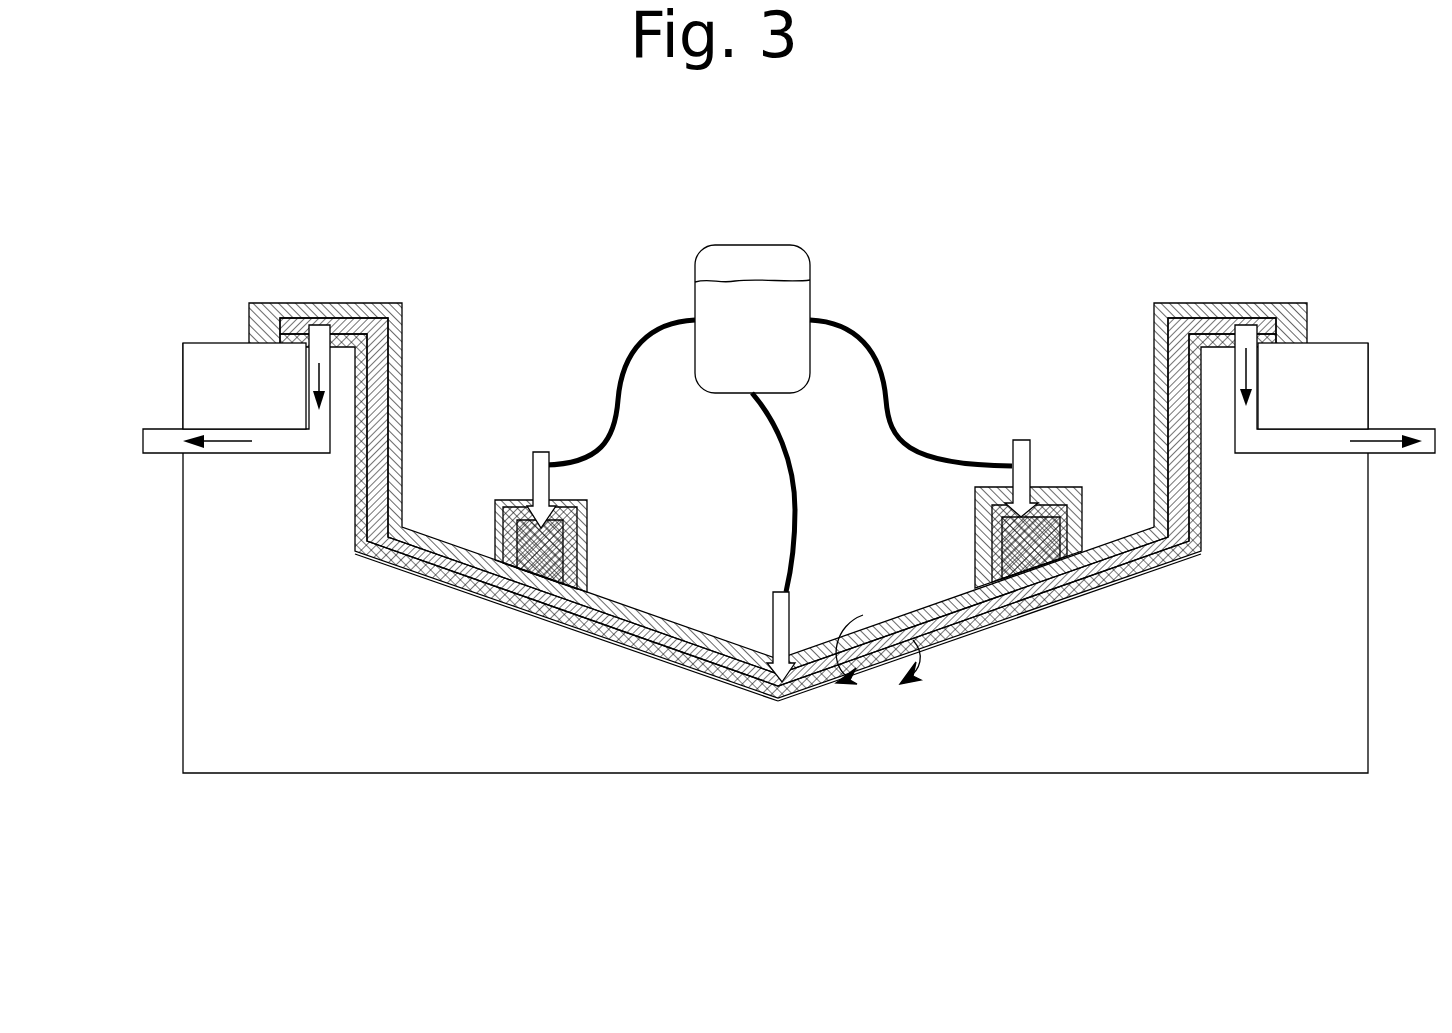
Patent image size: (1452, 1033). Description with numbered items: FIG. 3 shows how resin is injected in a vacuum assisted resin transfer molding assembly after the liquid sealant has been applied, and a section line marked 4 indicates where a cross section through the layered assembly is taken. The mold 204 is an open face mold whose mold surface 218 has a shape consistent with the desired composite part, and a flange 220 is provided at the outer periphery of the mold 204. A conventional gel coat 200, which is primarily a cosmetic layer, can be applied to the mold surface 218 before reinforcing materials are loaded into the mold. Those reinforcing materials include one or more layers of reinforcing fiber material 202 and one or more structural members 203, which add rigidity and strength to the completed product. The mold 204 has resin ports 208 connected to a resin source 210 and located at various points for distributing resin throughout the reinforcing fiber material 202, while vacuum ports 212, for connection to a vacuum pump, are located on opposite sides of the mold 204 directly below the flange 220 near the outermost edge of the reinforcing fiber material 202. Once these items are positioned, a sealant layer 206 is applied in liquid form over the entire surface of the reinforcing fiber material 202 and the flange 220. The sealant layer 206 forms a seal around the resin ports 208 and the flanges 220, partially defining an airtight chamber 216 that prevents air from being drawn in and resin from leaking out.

The gel coat 200 is at (505, 607).
The reinforcing fiber material 202 is at (390, 407).
The structural member 203 is at (590, 538).
The mold 204 is at (312, 678).
The sealant layer 206 is at (403, 335).
The resin port 208 is at (528, 463).
The resin source 210 is at (800, 254).
The vacuum port 212 is at (305, 353).
The airtight chamber 216 is at (1035, 590).
The mold surface 218 is at (563, 625).
The flange 220 is at (227, 342).
The section line 4- 4 is at (878, 661).